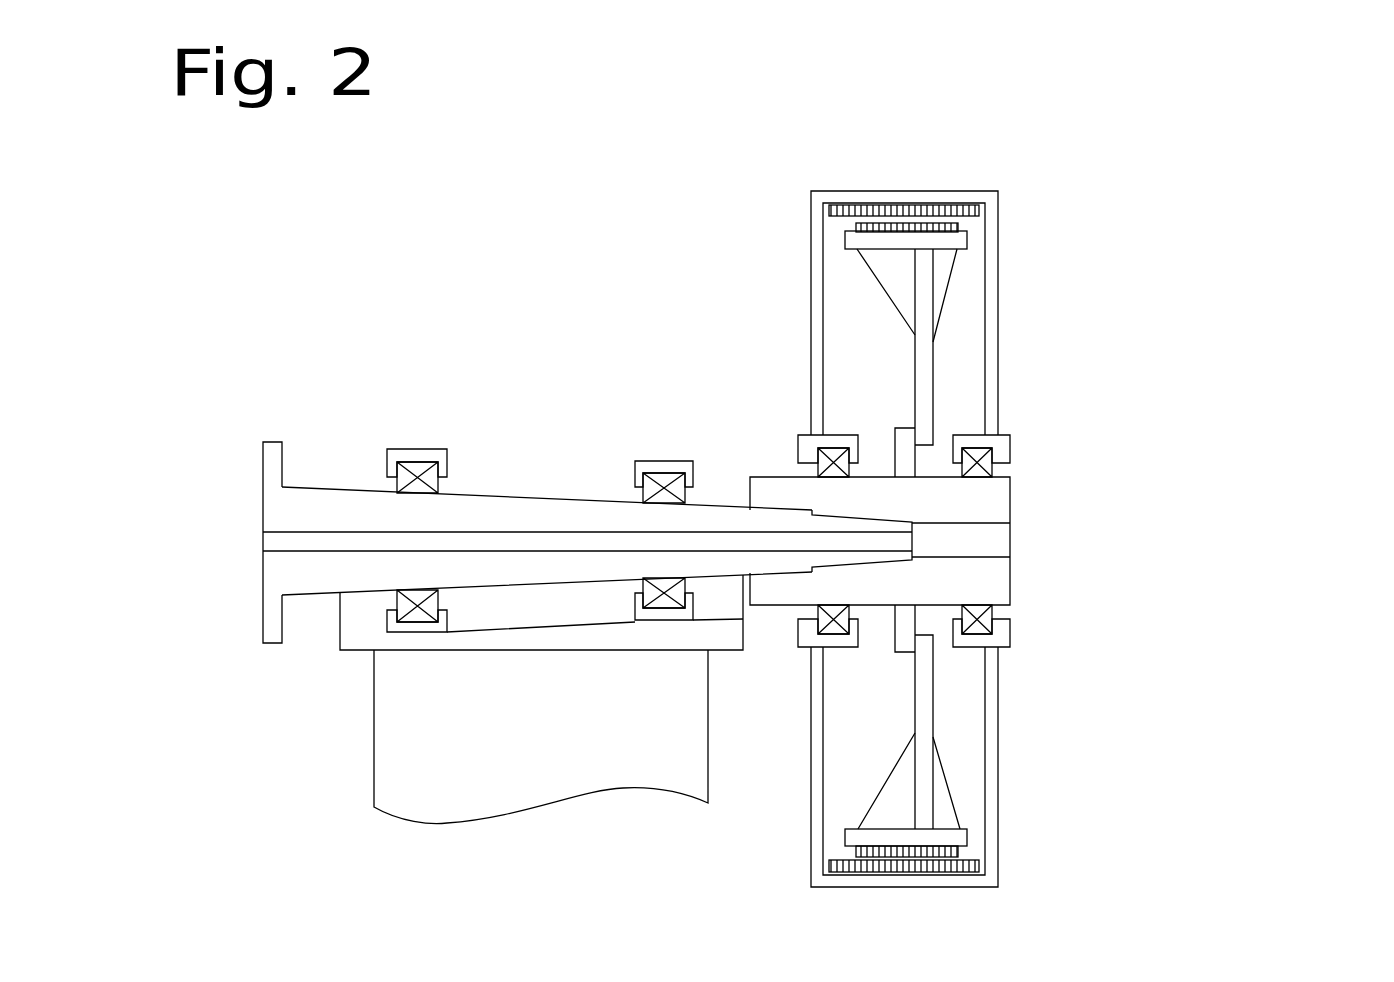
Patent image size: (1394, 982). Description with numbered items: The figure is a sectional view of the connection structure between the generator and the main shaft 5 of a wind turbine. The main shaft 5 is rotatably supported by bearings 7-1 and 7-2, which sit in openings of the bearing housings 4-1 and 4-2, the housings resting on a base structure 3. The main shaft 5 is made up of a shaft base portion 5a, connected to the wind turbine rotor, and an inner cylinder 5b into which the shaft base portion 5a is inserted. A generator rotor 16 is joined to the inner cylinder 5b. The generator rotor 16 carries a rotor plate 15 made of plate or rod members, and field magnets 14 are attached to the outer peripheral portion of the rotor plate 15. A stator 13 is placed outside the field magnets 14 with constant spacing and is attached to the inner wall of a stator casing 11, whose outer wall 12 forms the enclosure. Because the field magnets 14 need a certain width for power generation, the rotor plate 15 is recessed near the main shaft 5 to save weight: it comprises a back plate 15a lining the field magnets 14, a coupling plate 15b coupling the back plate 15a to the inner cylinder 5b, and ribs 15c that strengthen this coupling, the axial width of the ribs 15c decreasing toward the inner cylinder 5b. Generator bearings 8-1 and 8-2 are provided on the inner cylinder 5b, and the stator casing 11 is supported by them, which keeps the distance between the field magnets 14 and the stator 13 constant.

The nacelle base 3 is at (347, 643).
The bearing housing 4-1 is at (403, 451).
The bearing 7-1 is at (418, 470).
The bearing housing 4-2 is at (650, 461).
The bearing 7-2 is at (663, 478).
The main shaft 5 is at (778, 526).
The shaft base portion 5a is at (540, 500).
The inner cylinder 5b is at (1010, 502).
The generator bearing 8-1 is at (800, 467).
The generator bearing 8-2 is at (1010, 467).
The stator casing 11 is at (855, 191).
The generator housing 12 is at (811, 237).
The stator 13 is at (941, 207).
The field magnets 14 is at (960, 231).
The rotor plate 15 is at (1076, 538).
The back plate 15a is at (965, 241).
The coupling plate 15b is at (930, 360).
The ribs 15c is at (945, 268).
The generator rotor 16 is at (1089, 521).